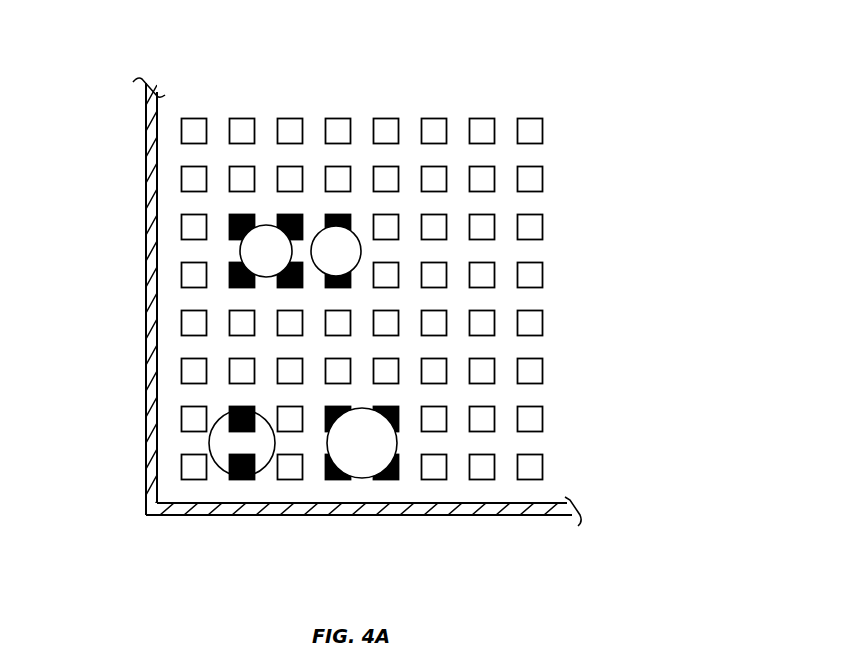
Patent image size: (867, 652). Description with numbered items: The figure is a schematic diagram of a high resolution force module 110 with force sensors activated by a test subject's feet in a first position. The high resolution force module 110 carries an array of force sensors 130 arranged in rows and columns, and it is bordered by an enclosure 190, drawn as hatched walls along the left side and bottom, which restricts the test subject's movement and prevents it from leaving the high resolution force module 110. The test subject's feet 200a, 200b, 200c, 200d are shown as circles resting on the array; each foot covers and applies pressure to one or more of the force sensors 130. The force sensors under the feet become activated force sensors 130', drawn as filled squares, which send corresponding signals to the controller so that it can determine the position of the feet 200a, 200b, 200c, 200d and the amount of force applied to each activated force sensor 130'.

The high resolution force module 110 is at (607, 52).
The enclosure 190 is at (150, 130).
The force sensor 130 is at (137, 444).
The activated force sensor 130' is at (185, 511).
The foot 200a is at (360, 478).
The foot 200b is at (212, 463).
The foot 200c is at (243, 252).
The foot 200d is at (320, 264).